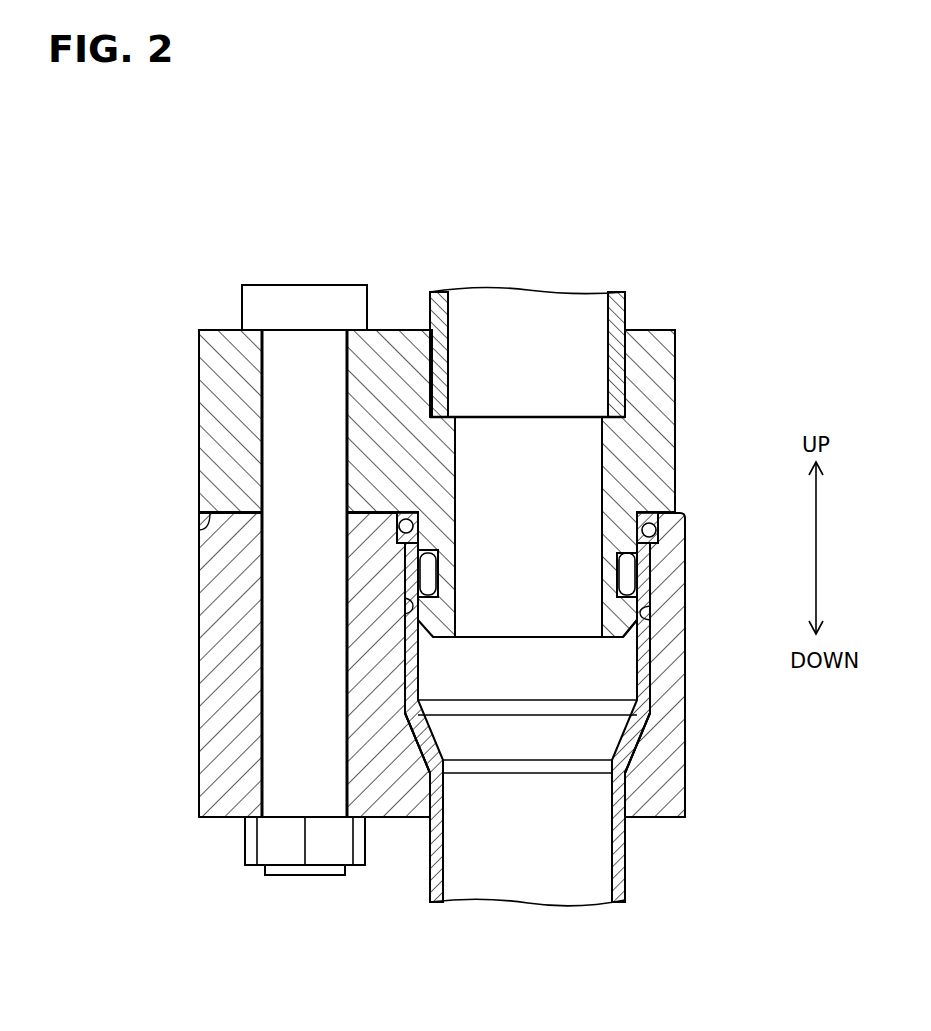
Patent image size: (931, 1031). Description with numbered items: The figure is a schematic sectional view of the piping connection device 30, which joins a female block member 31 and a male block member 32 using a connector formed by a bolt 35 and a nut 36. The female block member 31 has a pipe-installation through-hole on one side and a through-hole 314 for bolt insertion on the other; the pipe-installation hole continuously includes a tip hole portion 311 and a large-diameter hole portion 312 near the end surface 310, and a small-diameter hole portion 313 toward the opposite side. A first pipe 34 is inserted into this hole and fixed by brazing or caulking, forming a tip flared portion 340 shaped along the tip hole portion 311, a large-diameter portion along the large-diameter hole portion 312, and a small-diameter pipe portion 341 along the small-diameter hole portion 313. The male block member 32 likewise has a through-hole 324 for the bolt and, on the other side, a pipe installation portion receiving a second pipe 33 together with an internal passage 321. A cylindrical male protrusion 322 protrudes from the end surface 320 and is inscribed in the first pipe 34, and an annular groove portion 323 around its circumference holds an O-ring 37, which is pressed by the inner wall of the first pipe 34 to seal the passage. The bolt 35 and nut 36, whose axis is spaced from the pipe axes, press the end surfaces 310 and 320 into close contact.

The piping connection device 30 is at (665, 276).
The female block member 31 is at (196, 647).
The male block member 32 is at (196, 405).
The second pipe 33 is at (618, 303).
The first pipe 34 is at (620, 877).
The bolt 35 is at (315, 292).
The nut 36 is at (245, 847).
The O-ring 37 is at (632, 575).
The end surface 310 is at (224, 511).
The tip hole portion 311 is at (397, 534).
The large-diameter hole portion 312 is at (403, 613).
The small-diameter hole portion 313 is at (430, 842).
The through-hole 314 is at (262, 668).
The end surface 320 is at (198, 528).
The internal passage 321 is at (553, 472).
The male protrusion 322 is at (616, 638).
The annular groove portion 323 is at (630, 587).
The through-hole 324 is at (262, 352).
The tip flared portion 340 is at (395, 511).
The small-diameter pipe portion 341 is at (440, 800).